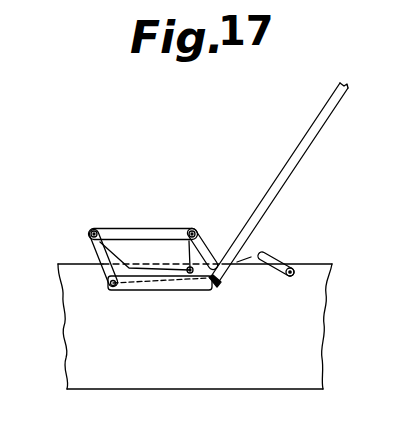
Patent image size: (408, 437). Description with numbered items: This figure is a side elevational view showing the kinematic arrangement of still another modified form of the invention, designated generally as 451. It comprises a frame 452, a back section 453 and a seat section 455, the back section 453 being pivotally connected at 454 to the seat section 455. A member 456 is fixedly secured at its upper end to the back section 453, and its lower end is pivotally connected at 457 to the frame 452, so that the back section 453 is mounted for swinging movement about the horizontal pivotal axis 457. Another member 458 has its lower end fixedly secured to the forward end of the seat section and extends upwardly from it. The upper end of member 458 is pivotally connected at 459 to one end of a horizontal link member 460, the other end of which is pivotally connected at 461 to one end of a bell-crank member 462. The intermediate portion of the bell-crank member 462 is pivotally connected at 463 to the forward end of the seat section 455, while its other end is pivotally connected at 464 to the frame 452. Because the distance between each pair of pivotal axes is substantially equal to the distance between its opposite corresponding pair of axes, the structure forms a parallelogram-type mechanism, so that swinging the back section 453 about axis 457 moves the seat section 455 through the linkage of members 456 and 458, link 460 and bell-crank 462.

The modified form of the invention 451 is at (159, 201).
The frame 452 is at (318, 265).
The back section 453 is at (290, 172).
The pivotal connection 454 is at (214, 286).
The seat section 455 is at (142, 291).
The member 456 is at (268, 255).
The pivotal connection 457 is at (293, 267).
The member 458 is at (206, 247).
The pivotal connection 459 is at (192, 230).
The horizontal link member 460 is at (125, 228).
The pivotal connection 461 is at (94, 230).
The bell-crank member 462 is at (96, 252).
The pivotal connection 463 is at (109, 280).
The pivotal connection 464 is at (186, 264).